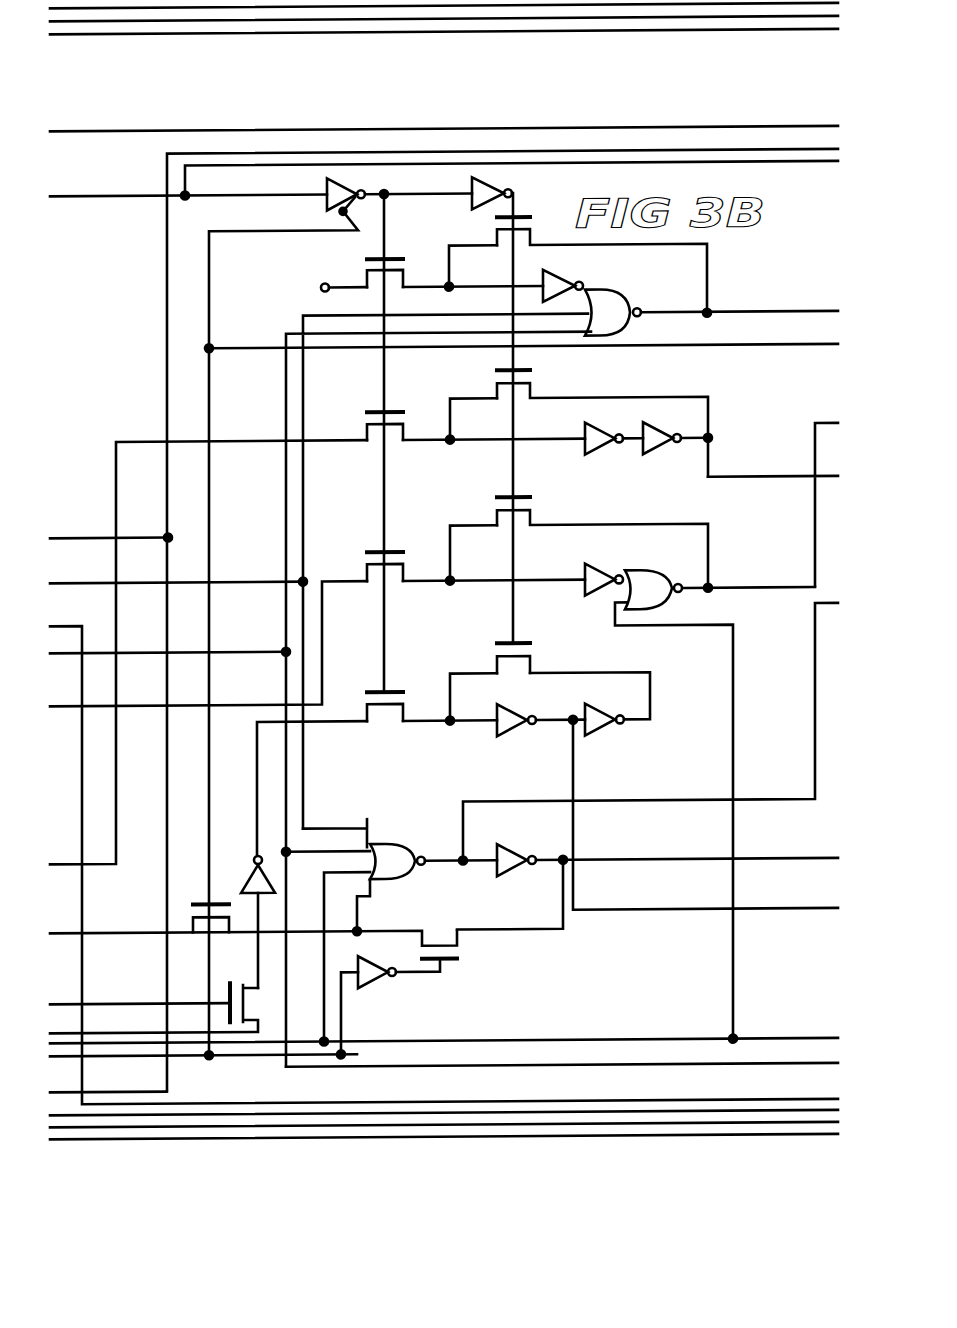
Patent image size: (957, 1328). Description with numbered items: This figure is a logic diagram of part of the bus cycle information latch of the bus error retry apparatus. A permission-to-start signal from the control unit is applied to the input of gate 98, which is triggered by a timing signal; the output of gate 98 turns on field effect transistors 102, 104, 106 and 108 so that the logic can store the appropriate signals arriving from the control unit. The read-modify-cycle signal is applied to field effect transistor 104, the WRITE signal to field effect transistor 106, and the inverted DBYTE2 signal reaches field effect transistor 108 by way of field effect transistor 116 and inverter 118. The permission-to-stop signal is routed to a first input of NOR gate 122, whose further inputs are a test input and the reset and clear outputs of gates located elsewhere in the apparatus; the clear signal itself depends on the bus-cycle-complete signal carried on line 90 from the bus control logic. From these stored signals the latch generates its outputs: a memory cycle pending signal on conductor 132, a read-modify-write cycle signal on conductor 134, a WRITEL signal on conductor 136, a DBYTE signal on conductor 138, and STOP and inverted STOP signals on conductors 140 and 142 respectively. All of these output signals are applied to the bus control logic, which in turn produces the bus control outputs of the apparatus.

The line 90 is at (360, 1103).
The gate 98 is at (326, 203).
The field effect transistor 102 is at (354, 266).
The field effect transistor 104 is at (364, 416).
The field effect transistor 106 is at (364, 560).
The field effect transistor 108 is at (383, 718).
The field effect transistor 116 is at (234, 1032).
The inverter 118 is at (267, 862).
The NOR gate 122 is at (404, 881).
The conductor 132 is at (758, 315).
The conductor 134 is at (784, 480).
The conductor 136 is at (766, 588).
The conductor 138 is at (643, 915).
The conductor 140 is at (623, 803).
The conductor 142 is at (689, 858).